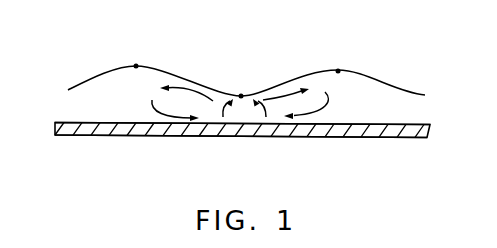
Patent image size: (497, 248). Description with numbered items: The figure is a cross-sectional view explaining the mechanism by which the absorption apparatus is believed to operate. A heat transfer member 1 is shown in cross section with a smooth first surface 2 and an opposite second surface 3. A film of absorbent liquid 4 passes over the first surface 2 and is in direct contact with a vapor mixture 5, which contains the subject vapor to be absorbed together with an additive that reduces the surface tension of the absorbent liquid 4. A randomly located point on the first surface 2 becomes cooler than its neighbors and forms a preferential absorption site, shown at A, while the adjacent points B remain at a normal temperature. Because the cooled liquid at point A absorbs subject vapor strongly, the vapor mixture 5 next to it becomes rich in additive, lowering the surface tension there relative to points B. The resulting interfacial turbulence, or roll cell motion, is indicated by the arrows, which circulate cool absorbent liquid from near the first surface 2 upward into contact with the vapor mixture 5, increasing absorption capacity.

The heat transfer member 1 is at (385, 131).
The first surface 2 is at (411, 122).
The second surface 3 is at (358, 138).
The film of absorbent liquid 4 is at (378, 92).
The vapor mixture 5 is at (246, 68).
The preferential absorption site A is at (241, 87).
The adjacent points at normal temperature B is at (237, 56).